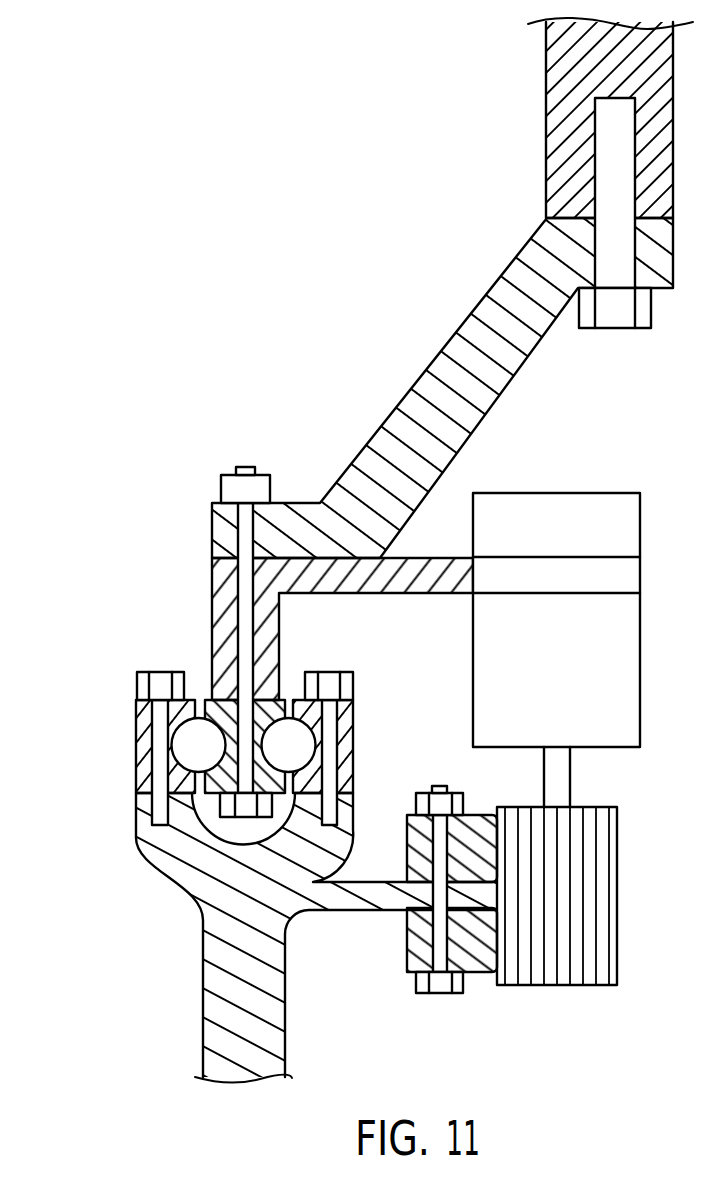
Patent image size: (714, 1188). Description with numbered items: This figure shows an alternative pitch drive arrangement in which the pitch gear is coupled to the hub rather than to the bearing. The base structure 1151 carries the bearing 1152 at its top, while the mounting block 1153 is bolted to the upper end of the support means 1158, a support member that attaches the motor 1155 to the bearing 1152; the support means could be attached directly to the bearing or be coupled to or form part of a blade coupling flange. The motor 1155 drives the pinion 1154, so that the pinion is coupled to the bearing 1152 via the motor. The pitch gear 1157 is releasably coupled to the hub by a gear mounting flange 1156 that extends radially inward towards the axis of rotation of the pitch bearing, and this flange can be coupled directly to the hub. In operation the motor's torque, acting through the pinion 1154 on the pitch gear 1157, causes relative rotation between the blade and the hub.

The base 1151 is at (222, 962).
The bearing 1152 is at (110, 717).
The mounting block 1153 is at (559, 80).
The pinion 1154 is at (605, 893).
The motor 1155 is at (623, 648).
The gear mounting flange 1156 is at (369, 897).
The pitch gear 1157 is at (475, 963).
The support means 1158 is at (334, 571).